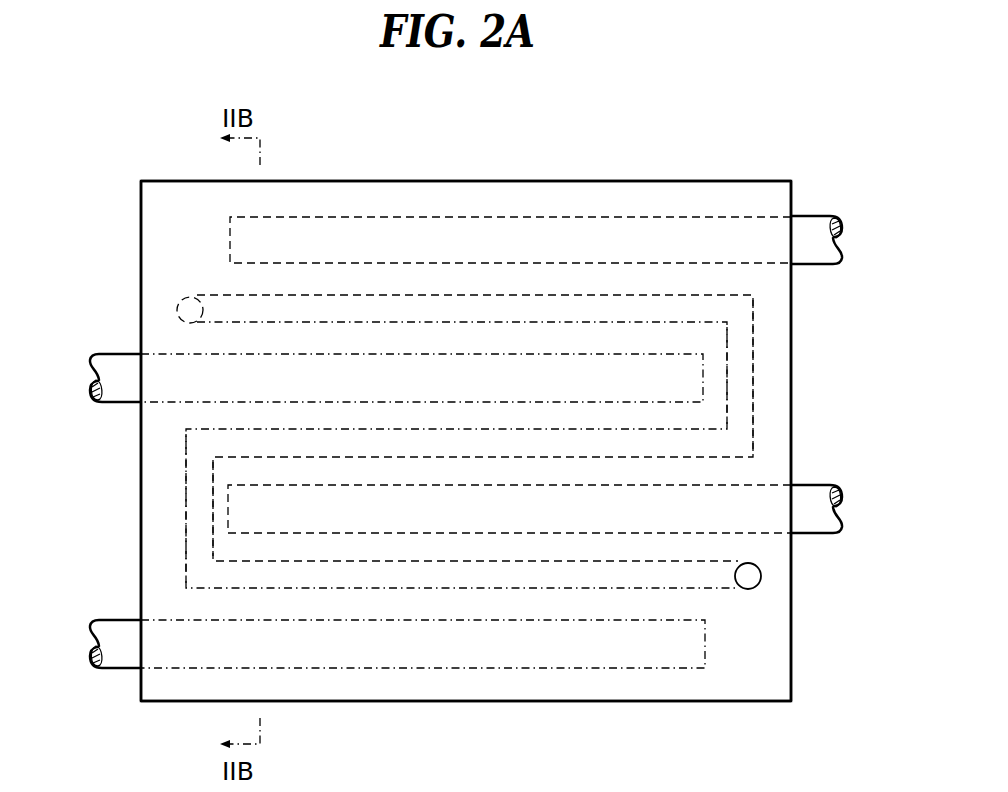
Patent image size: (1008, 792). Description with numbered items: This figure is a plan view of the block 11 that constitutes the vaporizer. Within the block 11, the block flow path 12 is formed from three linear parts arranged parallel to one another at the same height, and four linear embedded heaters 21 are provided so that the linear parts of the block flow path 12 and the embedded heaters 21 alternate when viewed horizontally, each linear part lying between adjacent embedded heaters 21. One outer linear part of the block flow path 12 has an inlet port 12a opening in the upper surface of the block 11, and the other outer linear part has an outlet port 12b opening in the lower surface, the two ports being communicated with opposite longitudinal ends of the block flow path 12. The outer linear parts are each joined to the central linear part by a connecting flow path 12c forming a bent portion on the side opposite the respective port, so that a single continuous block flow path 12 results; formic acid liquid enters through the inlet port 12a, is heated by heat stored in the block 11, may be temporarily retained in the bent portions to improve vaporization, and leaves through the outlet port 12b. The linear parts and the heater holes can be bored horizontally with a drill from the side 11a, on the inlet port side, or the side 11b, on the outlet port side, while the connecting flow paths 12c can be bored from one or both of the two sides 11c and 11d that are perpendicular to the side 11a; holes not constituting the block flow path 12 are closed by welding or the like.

The block 11 is at (697, 702).
The side 11a is at (791, 650).
The side 11b is at (141, 203).
The side 11c is at (196, 702).
The side 11d is at (722, 181).
The block flow path 12 is at (234, 310).
The inlet port 12a is at (752, 575).
The outlet port 12b is at (180, 311).
The connecting flow path 12c is at (740, 374).
The embedded heater 21 is at (810, 266).